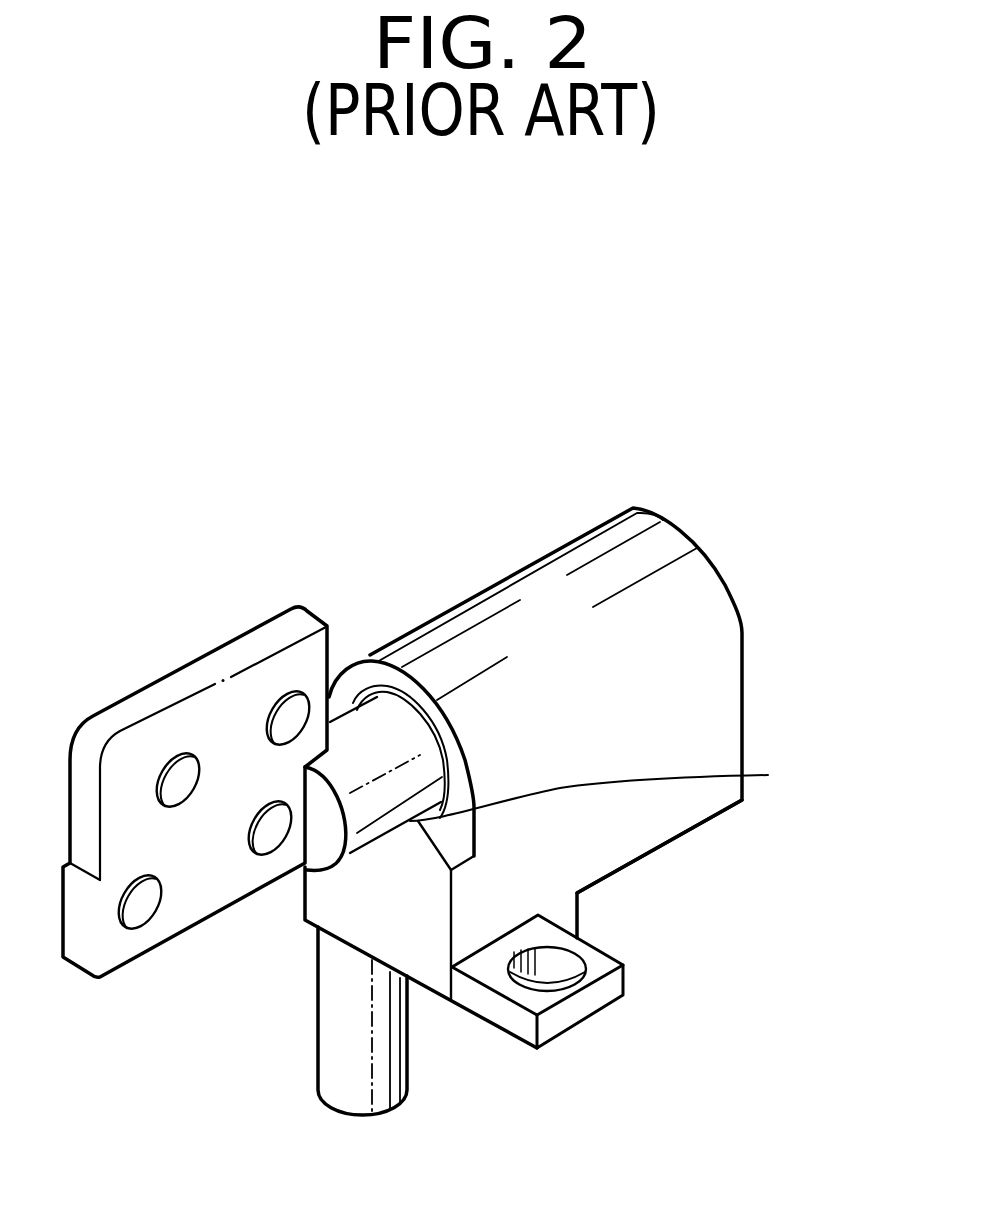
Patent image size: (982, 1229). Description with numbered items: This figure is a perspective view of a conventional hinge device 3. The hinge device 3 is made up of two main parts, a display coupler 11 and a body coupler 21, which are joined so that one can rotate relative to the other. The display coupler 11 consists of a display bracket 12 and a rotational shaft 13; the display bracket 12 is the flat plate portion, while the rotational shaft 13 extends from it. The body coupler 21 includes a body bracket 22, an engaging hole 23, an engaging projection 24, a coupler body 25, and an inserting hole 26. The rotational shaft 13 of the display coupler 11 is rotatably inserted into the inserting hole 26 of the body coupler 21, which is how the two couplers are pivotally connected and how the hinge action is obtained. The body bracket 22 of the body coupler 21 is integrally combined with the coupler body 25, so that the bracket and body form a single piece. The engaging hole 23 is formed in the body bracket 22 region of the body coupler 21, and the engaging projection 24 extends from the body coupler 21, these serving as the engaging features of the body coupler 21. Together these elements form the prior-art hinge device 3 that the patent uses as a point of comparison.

The hinge device 3 is at (149, 440).
The display coupler 11 is at (328, 540).
The display bracket 12 is at (261, 695).
The rotational shaft 13 is at (378, 715).
The body coupler 21 is at (820, 775).
The body bracket 22 is at (600, 965).
The engaging hole 23 is at (558, 980).
The engaging projection 24 is at (387, 1047).
The coupler body 25 is at (683, 803).
The inserting hole 26 is at (610, 788).